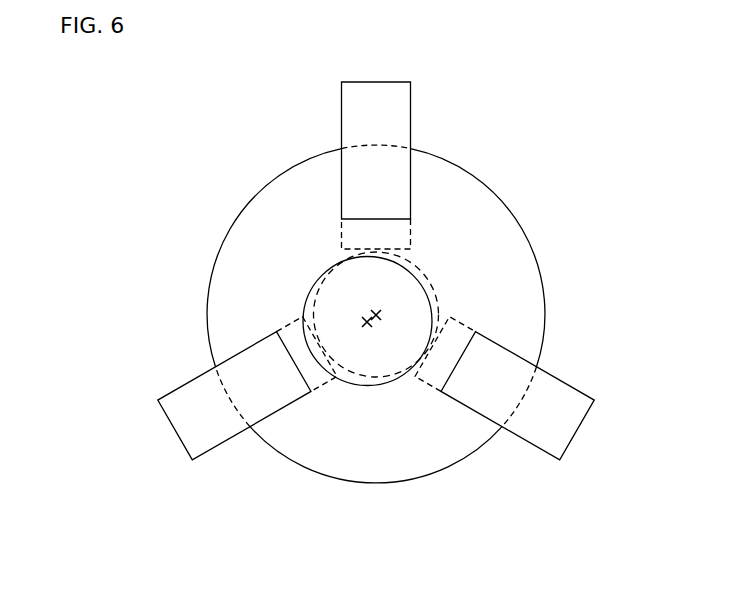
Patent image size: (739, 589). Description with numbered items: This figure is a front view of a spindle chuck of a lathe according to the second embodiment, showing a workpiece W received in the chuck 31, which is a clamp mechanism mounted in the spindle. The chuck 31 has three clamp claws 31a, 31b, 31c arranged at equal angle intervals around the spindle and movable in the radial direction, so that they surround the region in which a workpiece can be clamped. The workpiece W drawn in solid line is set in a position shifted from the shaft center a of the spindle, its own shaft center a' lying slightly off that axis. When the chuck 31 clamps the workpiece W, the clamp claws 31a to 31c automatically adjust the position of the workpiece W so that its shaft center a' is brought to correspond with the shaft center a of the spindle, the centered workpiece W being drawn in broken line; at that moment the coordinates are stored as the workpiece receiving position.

The chuck 31 is at (482, 173).
The clamp claw 31a is at (376, 82).
The clamp claw 31b is at (577, 430).
The clamp claw 31c is at (172, 428).
The workpiece W is at (305, 308).
The shaft center of the spindle a is at (483, 258).
The shaft center of the workpiece a' is at (343, 428).